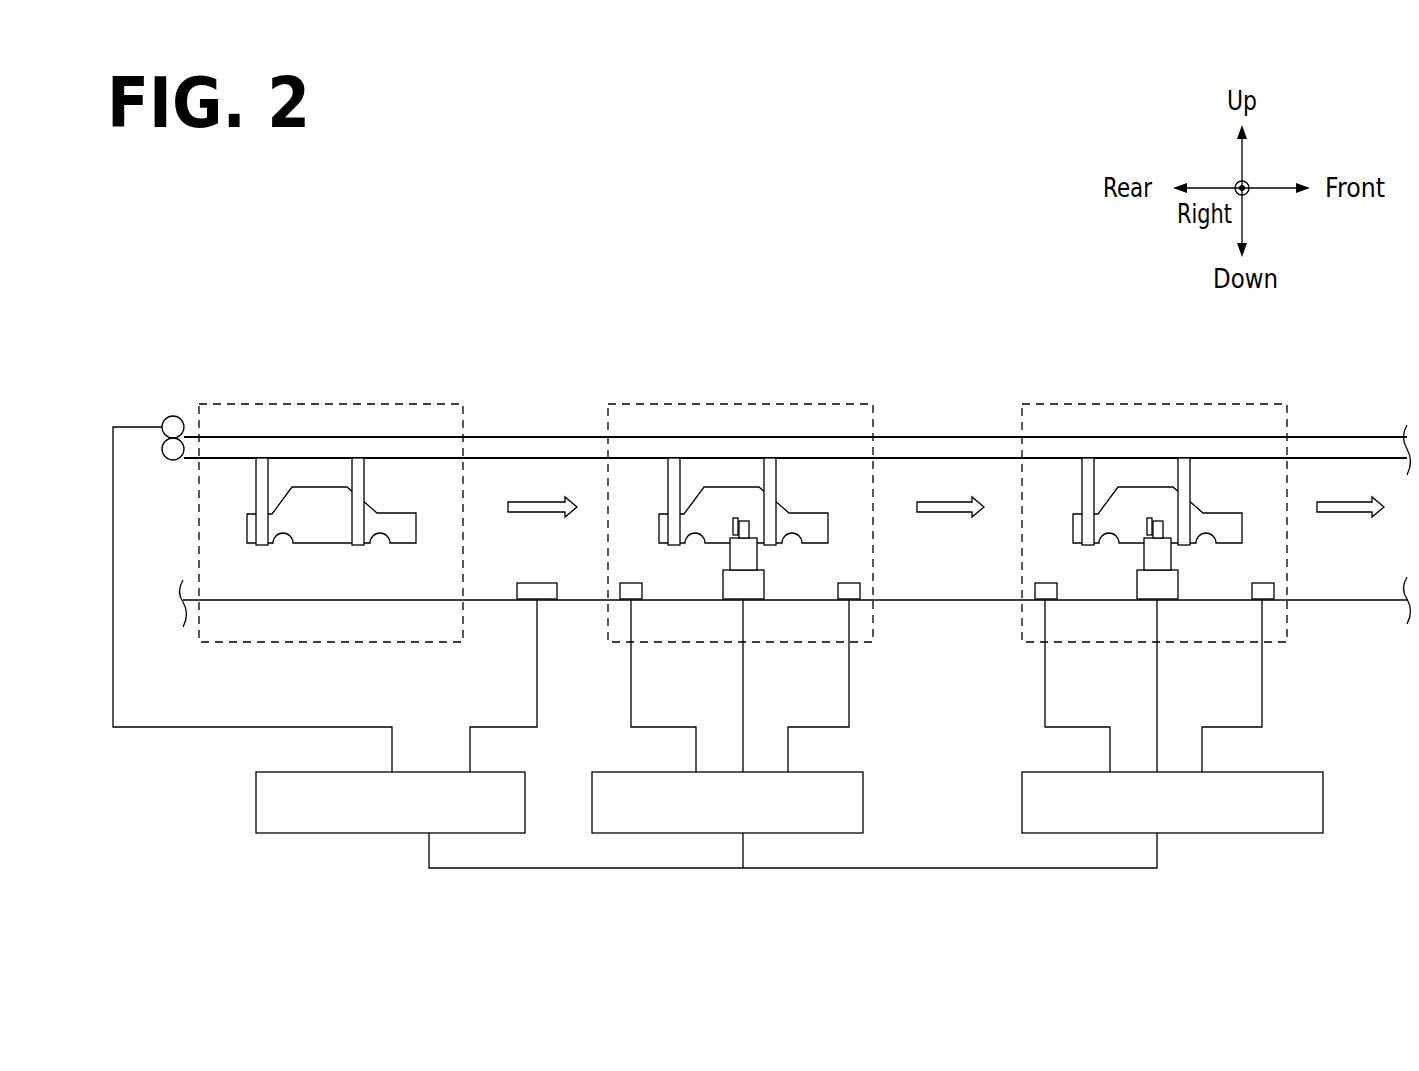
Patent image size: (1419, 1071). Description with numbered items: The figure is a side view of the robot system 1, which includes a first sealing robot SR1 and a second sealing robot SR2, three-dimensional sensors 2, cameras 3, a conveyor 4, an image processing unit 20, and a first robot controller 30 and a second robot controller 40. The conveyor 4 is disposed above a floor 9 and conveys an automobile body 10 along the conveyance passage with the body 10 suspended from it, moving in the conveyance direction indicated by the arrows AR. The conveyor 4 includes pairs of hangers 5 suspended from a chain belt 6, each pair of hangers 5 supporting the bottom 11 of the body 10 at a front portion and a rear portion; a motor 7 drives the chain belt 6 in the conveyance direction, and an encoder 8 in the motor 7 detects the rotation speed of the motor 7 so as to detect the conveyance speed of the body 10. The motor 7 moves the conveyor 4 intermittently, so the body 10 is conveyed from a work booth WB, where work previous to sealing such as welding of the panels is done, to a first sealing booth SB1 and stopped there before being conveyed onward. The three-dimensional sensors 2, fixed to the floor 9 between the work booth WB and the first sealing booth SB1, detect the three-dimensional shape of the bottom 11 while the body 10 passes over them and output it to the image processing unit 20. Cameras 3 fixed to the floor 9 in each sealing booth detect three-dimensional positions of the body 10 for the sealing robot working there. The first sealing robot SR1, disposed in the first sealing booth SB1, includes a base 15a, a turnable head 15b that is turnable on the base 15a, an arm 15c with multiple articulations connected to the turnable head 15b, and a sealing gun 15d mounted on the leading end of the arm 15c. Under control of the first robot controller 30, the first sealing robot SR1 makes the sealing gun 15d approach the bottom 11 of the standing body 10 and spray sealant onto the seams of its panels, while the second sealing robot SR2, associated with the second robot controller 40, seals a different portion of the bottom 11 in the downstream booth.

The robot system 1 is at (938, 323).
The three-dimensional sensor 2 is at (517, 591).
The camera 3 is at (620, 591).
The conveyor 4 is at (529, 434).
The hanger 5 is at (256, 488).
The chain belt 6 is at (578, 458).
The motor 7 is at (169, 457).
The encoder 8 is at (165, 419).
The floor 9 is at (473, 599).
The automobile body 10 is at (320, 487).
The bottom 11 is at (318, 545).
The base 15a is at (764, 586).
The turnable head 15b is at (730, 556).
The arm 15c is at (749, 529).
The sealing gun 15d is at (733, 527).
The image processing unit 20 is at (256, 800).
The first robot controller 30 is at (863, 805).
The second robot controller 40 is at (1323, 805).
The work booth WB is at (249, 404).
The first sealing booth SB1 is at (670, 404).
The arrow AR is at (948, 516).
The first sealing robot SR1 is at (735, 611).
The second sealing robot SR2 is at (1149, 611).